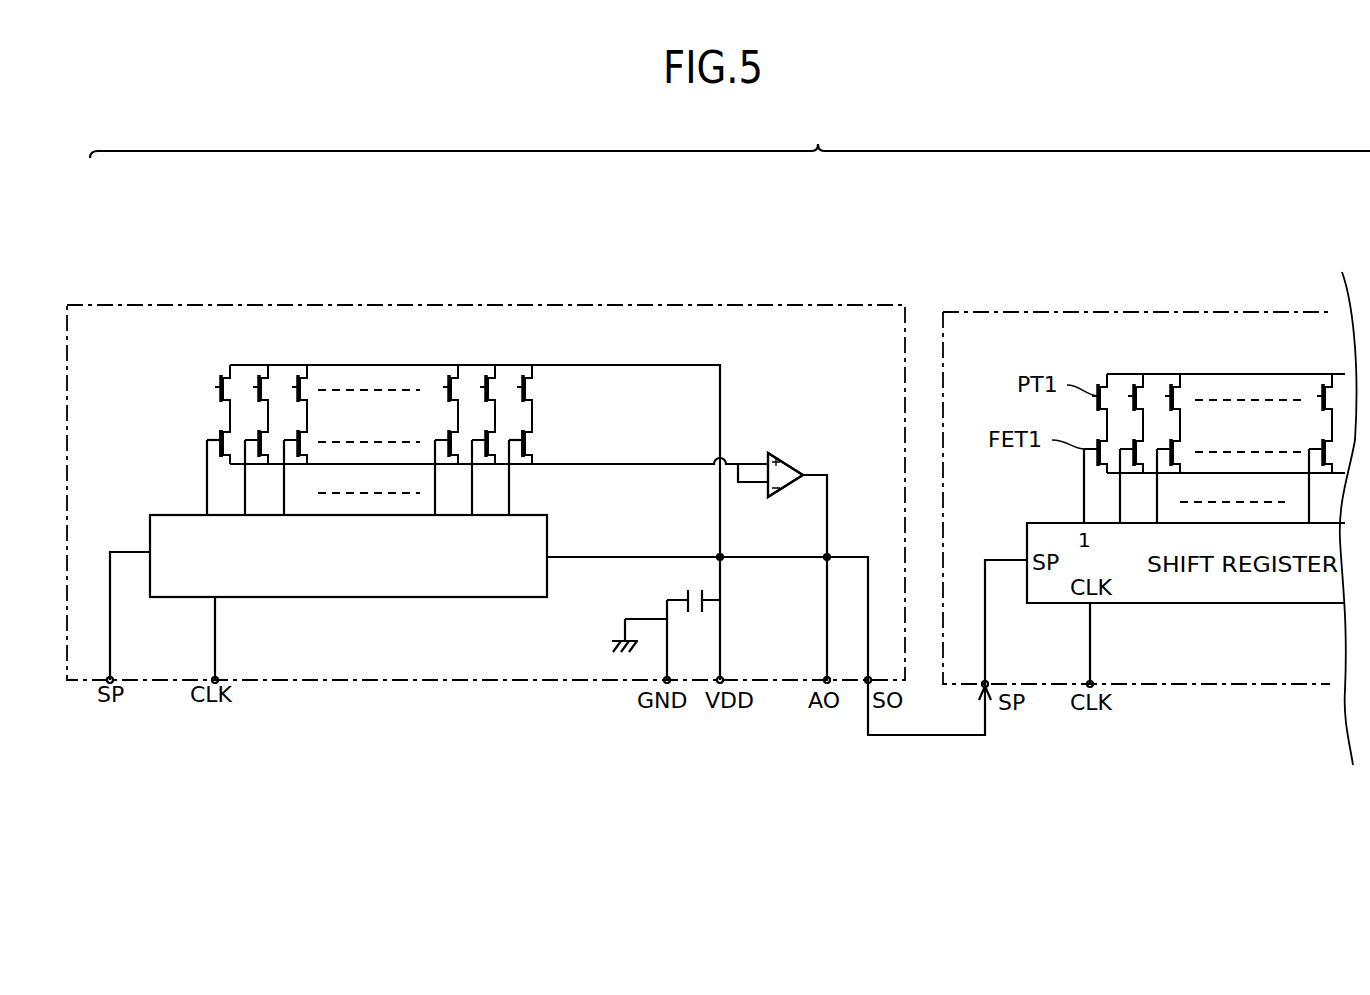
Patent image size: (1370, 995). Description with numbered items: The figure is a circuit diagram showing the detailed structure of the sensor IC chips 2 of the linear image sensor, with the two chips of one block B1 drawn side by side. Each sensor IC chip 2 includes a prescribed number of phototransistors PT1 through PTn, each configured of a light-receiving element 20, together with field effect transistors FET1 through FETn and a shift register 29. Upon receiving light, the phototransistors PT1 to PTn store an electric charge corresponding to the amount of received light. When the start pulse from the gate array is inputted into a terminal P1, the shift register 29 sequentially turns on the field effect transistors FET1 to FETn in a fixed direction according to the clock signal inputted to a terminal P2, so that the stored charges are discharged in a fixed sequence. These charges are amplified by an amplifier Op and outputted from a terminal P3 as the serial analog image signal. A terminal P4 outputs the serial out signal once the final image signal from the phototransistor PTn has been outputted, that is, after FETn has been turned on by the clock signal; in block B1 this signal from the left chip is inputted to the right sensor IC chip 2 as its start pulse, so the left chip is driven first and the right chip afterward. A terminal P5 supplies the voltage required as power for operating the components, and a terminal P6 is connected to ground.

The block B1 is at (730, 138).
The sensor IC chip 2 is at (551, 281).
The light-receiving element 20 is at (376, 436).
The phototransistor PT1 is at (221, 387).
The phototransistor PTn is at (534, 378).
The field effect transistor FET1 is at (208, 440).
The field effect transistor FETn is at (530, 440).
The shift register 29 is at (467, 569).
The amplifier Op is at (787, 462).
The terminal P1 is at (116, 683).
The terminal P2 is at (224, 683).
The terminal P3 is at (820, 684).
The terminal P4 is at (862, 684).
The terminal P5 is at (712, 683).
The terminal P6 is at (643, 681).